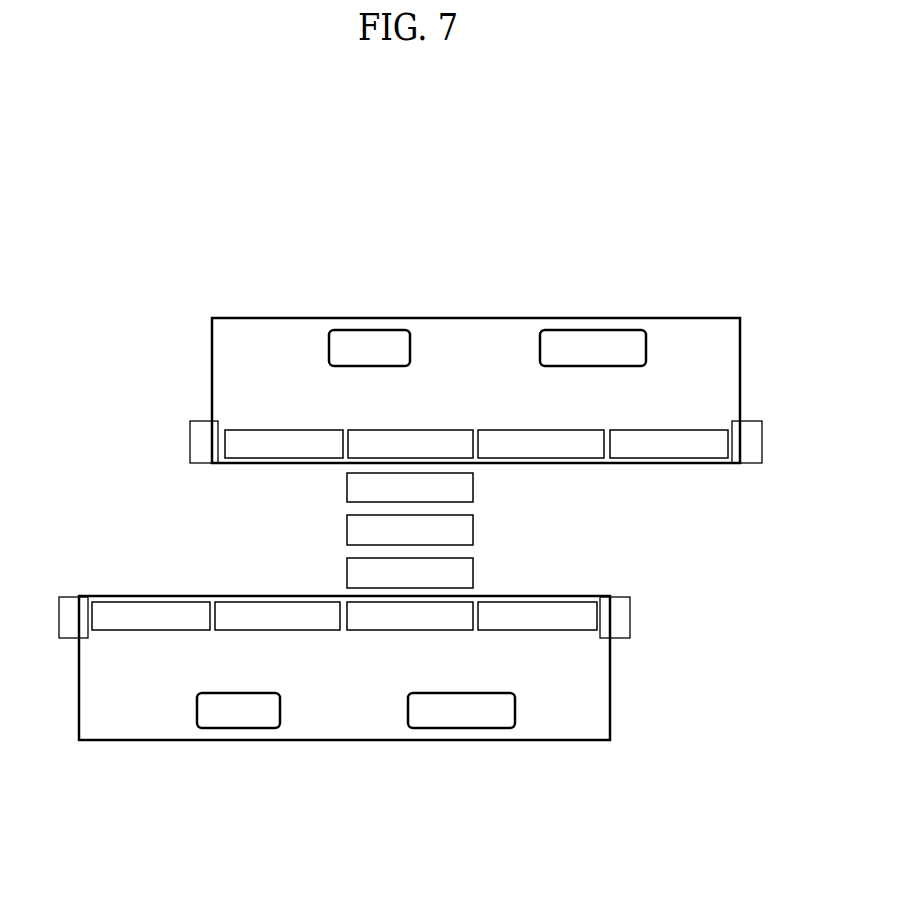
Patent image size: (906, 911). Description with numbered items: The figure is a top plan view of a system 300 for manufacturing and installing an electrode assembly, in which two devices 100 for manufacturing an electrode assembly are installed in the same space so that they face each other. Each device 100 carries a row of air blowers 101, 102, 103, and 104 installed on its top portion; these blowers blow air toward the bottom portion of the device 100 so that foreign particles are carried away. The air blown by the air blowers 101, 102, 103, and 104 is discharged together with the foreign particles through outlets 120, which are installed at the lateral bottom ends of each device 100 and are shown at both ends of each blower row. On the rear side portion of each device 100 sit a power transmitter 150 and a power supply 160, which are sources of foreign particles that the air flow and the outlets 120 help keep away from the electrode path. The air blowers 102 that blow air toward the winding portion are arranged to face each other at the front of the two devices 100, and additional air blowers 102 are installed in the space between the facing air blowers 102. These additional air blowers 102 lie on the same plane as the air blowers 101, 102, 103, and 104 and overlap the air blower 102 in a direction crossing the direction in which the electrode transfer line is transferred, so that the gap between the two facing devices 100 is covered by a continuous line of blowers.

The system for manufacturing and installing an electrode assembly 300 is at (137, 180).
The device for manufacturing an electrode assembly 100 is at (260, 302).
The air blower 101 is at (250, 448).
The air blower 102 is at (428, 440).
The air blower 103 is at (552, 450).
The air blower 104 is at (667, 450).
The outlet 120 is at (200, 458).
The power transmitter 150 is at (372, 342).
The power supply 160 is at (592, 343).